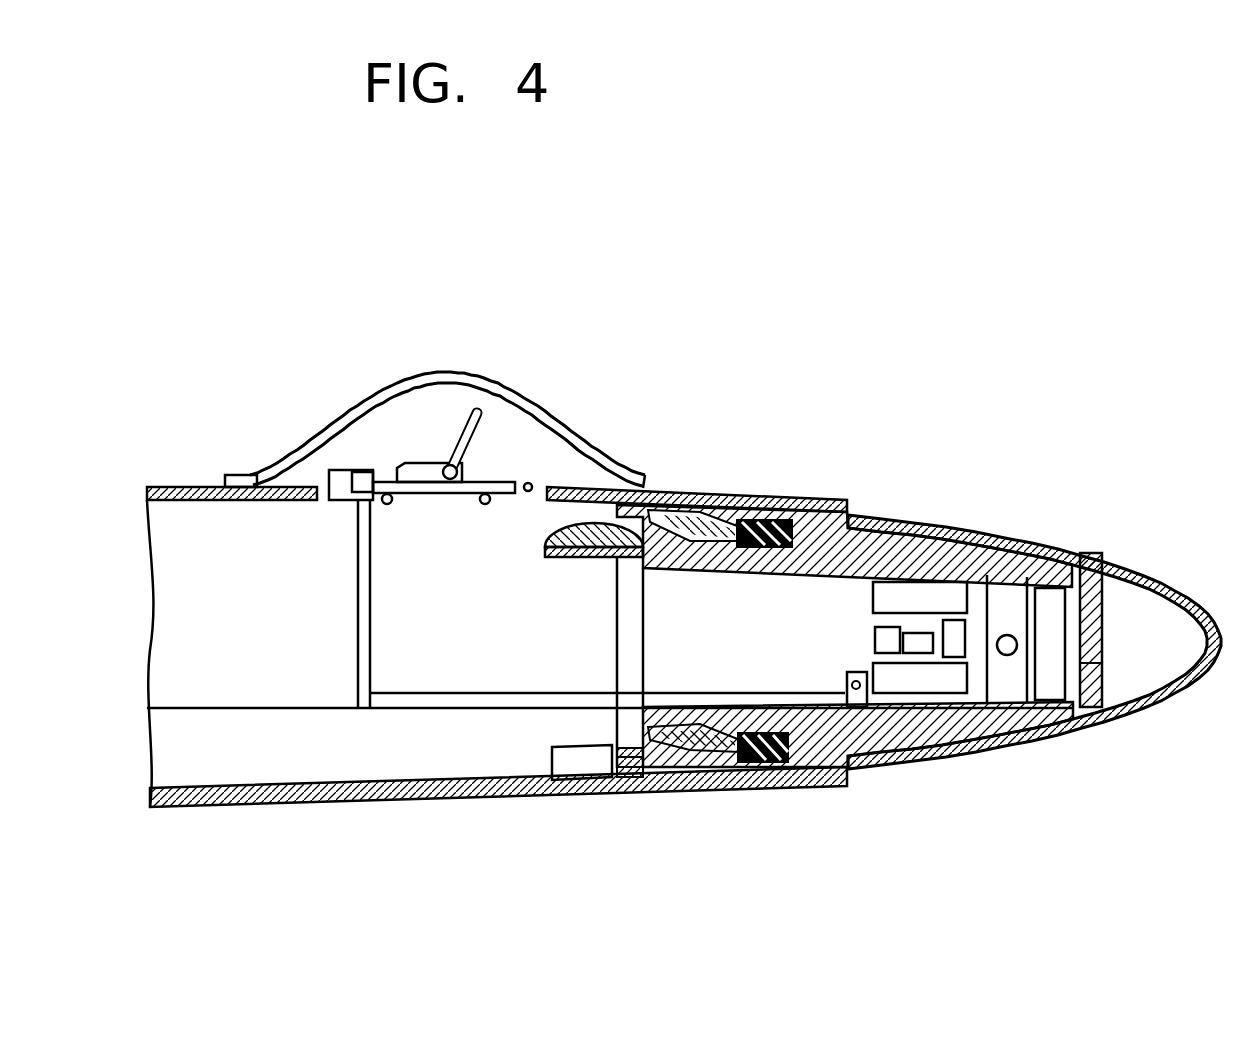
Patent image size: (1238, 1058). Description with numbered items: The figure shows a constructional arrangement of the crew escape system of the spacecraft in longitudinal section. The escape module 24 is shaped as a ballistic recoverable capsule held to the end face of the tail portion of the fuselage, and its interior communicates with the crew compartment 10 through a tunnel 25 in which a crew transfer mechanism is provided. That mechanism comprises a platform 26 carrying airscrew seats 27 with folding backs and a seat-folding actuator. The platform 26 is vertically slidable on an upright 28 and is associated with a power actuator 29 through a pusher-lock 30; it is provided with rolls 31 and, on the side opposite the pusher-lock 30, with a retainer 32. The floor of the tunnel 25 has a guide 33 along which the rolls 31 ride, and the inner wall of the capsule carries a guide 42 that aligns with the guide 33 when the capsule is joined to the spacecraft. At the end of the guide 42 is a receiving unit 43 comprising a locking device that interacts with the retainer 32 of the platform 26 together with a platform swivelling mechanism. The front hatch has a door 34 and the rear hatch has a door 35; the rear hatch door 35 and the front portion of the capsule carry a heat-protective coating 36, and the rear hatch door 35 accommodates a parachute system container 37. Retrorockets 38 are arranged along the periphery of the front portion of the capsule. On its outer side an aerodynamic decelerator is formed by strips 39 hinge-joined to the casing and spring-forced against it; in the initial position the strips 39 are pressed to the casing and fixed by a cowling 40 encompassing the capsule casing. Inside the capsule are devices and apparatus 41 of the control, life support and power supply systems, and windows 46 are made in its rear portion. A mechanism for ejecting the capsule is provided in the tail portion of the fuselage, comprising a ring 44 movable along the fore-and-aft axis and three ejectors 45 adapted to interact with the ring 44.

The crew compartment 10 is at (275, 477).
The escape module 24 is at (822, 520).
The tunnel 25 is at (507, 680).
The platform 26 is at (503, 482).
The airscrew seats 27 is at (422, 463).
The upright 28 is at (358, 597).
The power actuator 29 is at (342, 485).
The pusher-lock 30 is at (352, 482).
The rolls 31 is at (390, 505).
The retainer 32 is at (531, 484).
The guide 33 is at (455, 705).
The front hatch door 34 is at (578, 560).
The rear hatch door 35 is at (1032, 660).
The heat-protective coating 36 is at (600, 527).
The parachute system container 37 is at (1048, 600).
The retrorockets 38 is at (767, 770).
The strips 39 is at (882, 517).
The cowling 40 is at (858, 708).
The devices and apparatus 41 is at (890, 637).
The guide 42 is at (783, 703).
The receiving unit 43 is at (878, 750).
The ring 44 is at (660, 777).
The ejectors 45 is at (598, 768).
The windows 46 is at (1007, 655).